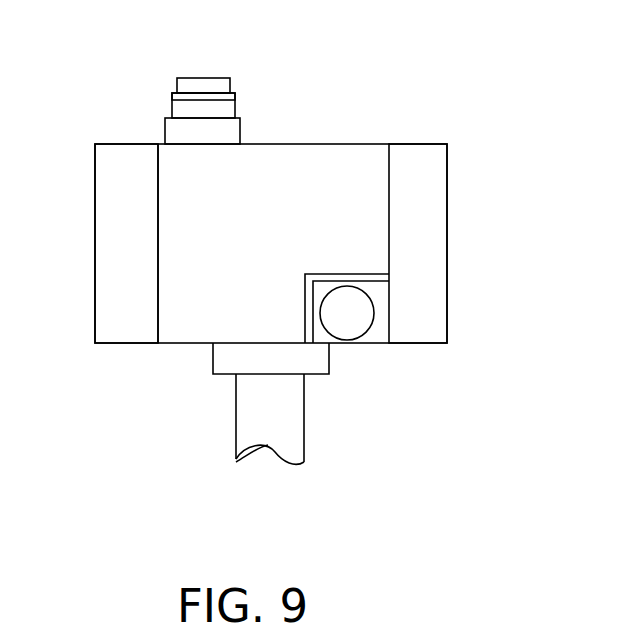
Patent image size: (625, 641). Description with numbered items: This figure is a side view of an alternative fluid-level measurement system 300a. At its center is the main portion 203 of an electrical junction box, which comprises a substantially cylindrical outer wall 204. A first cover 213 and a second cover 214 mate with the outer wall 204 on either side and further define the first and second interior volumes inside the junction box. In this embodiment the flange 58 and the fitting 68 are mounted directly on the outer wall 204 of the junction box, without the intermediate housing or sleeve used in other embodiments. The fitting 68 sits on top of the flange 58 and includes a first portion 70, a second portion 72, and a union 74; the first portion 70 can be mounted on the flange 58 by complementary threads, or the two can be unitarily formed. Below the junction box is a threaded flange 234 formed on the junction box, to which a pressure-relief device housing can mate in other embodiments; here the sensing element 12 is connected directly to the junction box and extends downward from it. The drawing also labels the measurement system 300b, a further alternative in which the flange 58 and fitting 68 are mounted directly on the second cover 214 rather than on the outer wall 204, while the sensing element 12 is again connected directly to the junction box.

The measurement system 300a is at (399, 66).
The measurement system 300b is at (318, 315).
The fitting 68 is at (203, 62).
The second portion 72 is at (177, 82).
The union 74 is at (237, 98).
The first portion 70 is at (172, 110).
The flange 58 is at (240, 134).
The first cover 213 is at (430, 238).
The second cover 214 is at (118, 255).
The outer wall 204 is at (183, 323).
The main portion 203 is at (374, 357).
The threaded flange 234 is at (330, 362).
The sensing element 12 is at (237, 430).